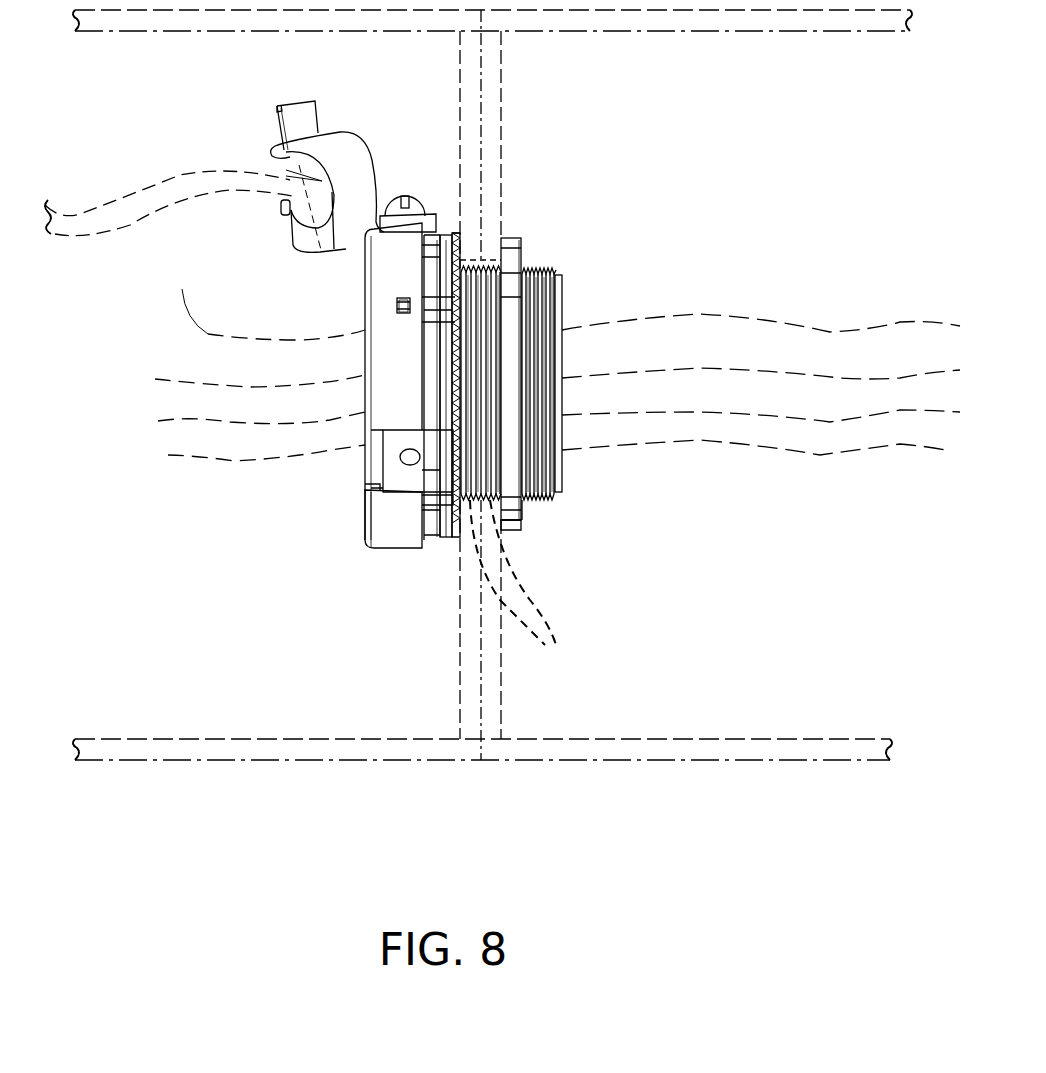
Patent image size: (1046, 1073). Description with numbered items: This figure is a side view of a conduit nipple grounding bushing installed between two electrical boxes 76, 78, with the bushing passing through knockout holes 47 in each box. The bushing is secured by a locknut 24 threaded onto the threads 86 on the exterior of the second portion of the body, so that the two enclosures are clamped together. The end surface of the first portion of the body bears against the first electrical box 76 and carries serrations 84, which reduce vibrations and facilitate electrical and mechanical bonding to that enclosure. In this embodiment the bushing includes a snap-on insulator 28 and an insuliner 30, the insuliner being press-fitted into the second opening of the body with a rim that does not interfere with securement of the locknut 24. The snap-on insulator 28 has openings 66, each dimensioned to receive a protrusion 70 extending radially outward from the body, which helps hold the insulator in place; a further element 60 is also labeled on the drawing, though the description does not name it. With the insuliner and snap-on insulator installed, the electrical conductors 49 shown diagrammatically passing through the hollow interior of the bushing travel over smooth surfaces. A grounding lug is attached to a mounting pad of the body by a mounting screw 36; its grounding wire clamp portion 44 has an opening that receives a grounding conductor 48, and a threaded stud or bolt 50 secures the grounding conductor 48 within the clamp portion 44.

The locknut 24 is at (512, 240).
The snap-on insulator 28 is at (382, 284).
The insuliner 30 is at (562, 478).
The mounting screw 36 is at (410, 200).
The grounding wire clamp portion 44 is at (280, 222).
The knockout holes 47 is at (516, 589).
The grounding conductor 48 is at (212, 170).
The electrical conductors 49 is at (668, 318).
The threaded stud or bolt 50 is at (316, 101).
The clip 60 is at (386, 540).
The openings 66 is at (403, 298).
The protrusion 70 is at (403, 313).
The electrical box 76 is at (333, 760).
The electrical box 78 is at (590, 760).
The serrations 84 is at (460, 540).
The threads 86 is at (538, 500).